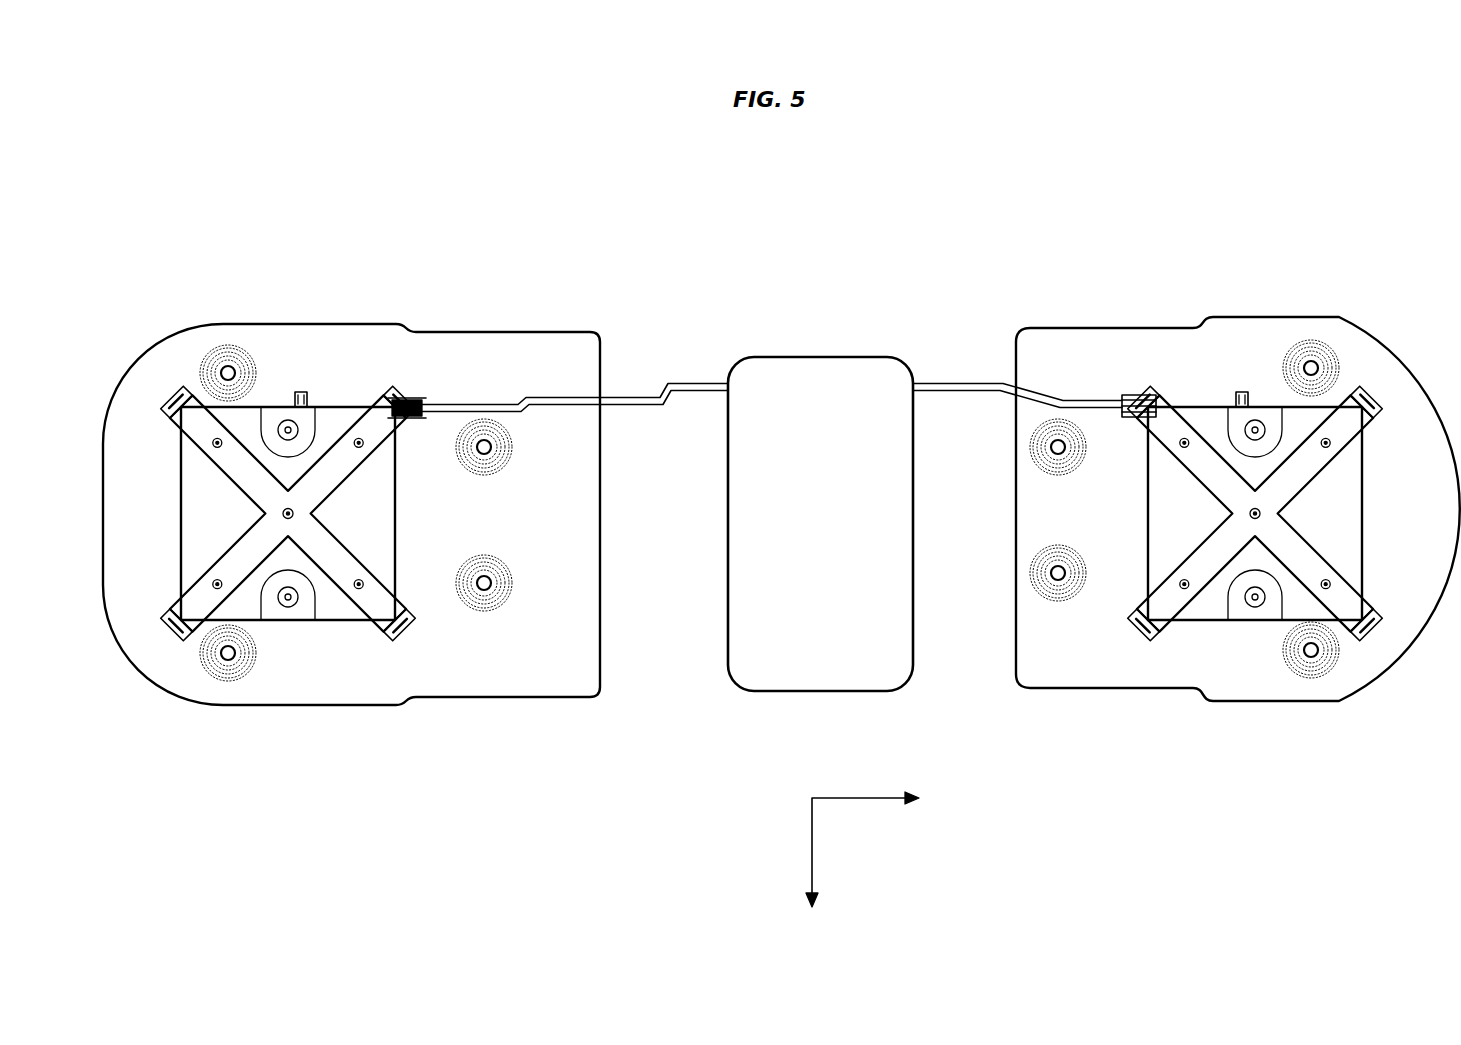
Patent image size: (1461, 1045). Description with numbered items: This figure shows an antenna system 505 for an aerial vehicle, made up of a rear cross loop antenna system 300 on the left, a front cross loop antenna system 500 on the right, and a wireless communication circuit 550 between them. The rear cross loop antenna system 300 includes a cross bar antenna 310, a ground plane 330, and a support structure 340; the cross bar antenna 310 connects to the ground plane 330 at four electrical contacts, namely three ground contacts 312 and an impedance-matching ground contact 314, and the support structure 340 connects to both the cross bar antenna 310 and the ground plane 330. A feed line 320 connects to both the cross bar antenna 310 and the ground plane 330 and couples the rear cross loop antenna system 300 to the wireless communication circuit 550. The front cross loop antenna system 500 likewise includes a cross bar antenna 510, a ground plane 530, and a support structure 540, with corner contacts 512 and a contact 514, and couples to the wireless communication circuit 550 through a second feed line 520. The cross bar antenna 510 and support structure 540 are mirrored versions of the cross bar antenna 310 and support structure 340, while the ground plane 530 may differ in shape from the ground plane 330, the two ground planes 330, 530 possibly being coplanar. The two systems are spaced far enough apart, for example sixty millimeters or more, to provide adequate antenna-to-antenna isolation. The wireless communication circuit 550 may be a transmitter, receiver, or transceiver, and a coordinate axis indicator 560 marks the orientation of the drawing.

The rear cross loop antenna system 300 is at (600, 265).
The cross bar antenna 310 is at (372, 430).
The ground contacts 312 is at (181, 398).
The impedance-matching ground contact 314 is at (299, 393).
The feed line 320 is at (480, 404).
The ground plane 330 is at (498, 660).
The support structure 340 is at (293, 610).
The front cross loop antenna system 500 is at (1458, 275).
The antenna system 505 is at (830, 256).
The cross bar antenna 510 is at (1178, 425).
The corner mounting tabs 512 is at (1360, 398).
The connector clip 514 is at (1243, 393).
The feed line 520 is at (1067, 403).
The ground plane 530 is at (1060, 660).
The support structure 540 is at (1252, 600).
The wireless communication circuit 550 is at (820, 524).
The coordinate axes 560 is at (849, 836).